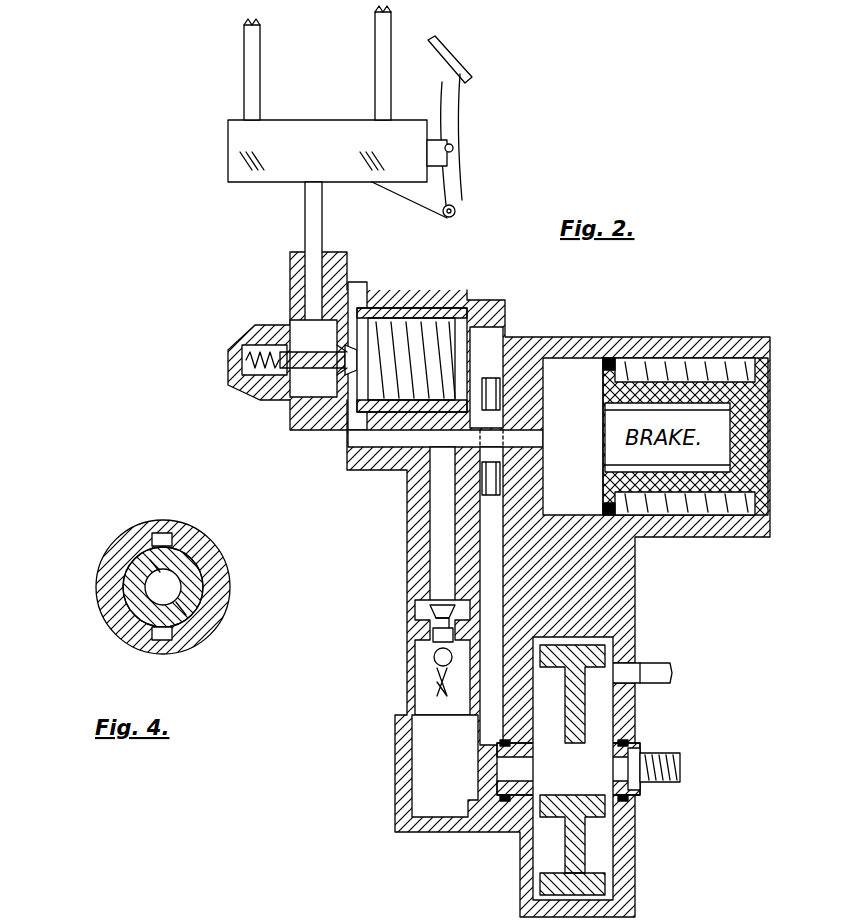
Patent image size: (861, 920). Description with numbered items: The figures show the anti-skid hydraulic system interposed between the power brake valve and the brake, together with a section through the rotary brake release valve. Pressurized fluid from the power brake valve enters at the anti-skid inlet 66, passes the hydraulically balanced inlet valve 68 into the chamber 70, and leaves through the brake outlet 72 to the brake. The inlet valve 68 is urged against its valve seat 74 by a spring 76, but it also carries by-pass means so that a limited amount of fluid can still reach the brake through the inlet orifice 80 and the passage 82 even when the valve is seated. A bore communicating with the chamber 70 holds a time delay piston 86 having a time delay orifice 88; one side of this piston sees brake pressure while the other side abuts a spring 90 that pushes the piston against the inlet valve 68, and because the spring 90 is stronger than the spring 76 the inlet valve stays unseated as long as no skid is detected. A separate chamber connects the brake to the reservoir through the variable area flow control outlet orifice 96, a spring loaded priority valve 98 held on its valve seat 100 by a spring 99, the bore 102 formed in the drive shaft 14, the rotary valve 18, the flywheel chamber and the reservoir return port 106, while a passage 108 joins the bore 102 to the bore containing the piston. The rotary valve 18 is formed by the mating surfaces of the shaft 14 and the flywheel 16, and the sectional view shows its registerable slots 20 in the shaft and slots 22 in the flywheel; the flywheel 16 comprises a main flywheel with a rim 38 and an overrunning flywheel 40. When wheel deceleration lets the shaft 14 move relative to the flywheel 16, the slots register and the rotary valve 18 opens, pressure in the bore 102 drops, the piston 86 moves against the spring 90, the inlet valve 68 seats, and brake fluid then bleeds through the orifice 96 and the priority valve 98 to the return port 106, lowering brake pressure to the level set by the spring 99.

In FIG. 2, the drive shaft 14 is at (640, 786).
In FIG. 4, the drive shaft 14 is at (185, 565).
In FIG. 4, the flywheel 16 is at (92, 593).
In FIG. 2, the rotary valve 18 is at (582, 792).
In FIG. 4, the slots in the shaft 20 is at (152, 561).
In FIG. 4, the slots in the flywheel 22 is at (165, 533).
In FIG. 2, the rim 38 is at (572, 842).
In FIG. 2, the overrunning flywheel 40 is at (605, 887).
In FIG. 2, the anti-skid inlet 66 is at (308, 215).
In FIG. 2, the hydraulically balanced inlet valve 68 is at (297, 370).
In FIG. 2, the chamber 70 is at (360, 292).
In FIG. 2, the brake outlet 72 is at (520, 437).
In FIG. 2, the valve seat 74 is at (345, 395).
In FIG. 2, the spring 76 is at (250, 372).
In FIG. 2, the inlet orifice 80 is at (300, 335).
In FIG. 2, the passage 82 is at (322, 375).
In FIG. 2, the time delay piston 86 is at (425, 310).
In FIG. 2, the time delay orifice 88 is at (352, 420).
In FIG. 2, the spring 90 is at (462, 318).
In FIG. 2, the variable area flow control outlet orifice 96 is at (430, 612).
In FIG. 2, the priority valve 98 is at (436, 660).
In FIG. 2, the spring 99 is at (436, 690).
In FIG. 2, the valve seat 100 is at (433, 640).
In FIG. 2, the bore 102 is at (545, 778).
In FIG. 2, the reservoir return port 106 is at (642, 672).
In FIG. 2, the passage 108 is at (498, 560).